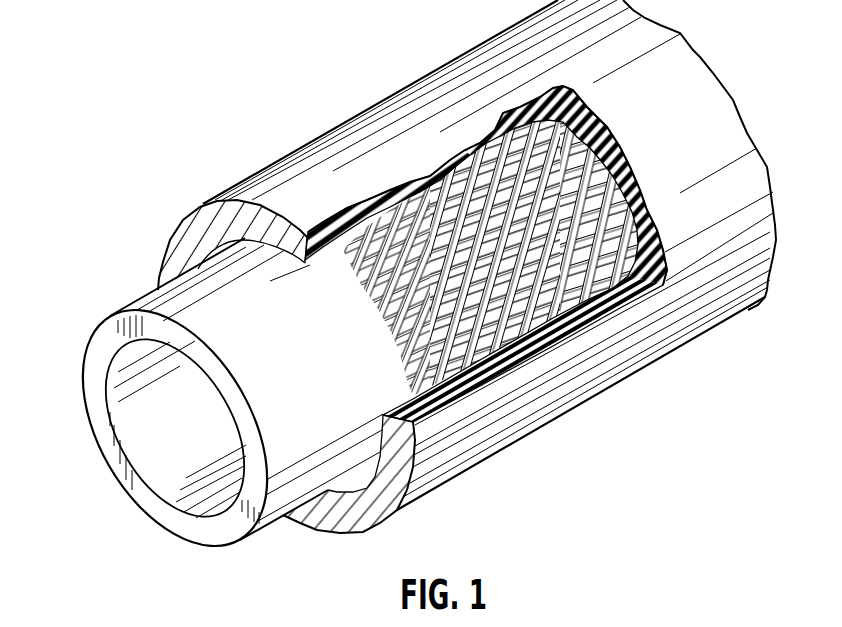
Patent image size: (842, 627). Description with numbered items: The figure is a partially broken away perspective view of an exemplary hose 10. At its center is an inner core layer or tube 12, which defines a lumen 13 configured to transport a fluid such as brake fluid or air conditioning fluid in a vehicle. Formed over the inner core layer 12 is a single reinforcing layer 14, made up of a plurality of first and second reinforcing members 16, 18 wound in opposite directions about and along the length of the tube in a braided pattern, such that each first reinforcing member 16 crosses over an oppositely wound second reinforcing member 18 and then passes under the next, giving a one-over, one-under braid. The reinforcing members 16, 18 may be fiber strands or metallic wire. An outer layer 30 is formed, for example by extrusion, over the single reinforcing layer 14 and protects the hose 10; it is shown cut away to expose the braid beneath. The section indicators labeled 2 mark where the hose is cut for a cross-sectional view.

The hose 10 is at (222, 48).
The inner core layer 12 is at (107, 352).
The lumen 13 is at (167, 482).
The single reinforcing layer 14 is at (384, 332).
The first reinforcing member 16 is at (622, 212).
The second reinforcing member 18 is at (599, 138).
The outer layer 30 is at (697, 53).
The section line for FIG. 2 is at (366, 62).